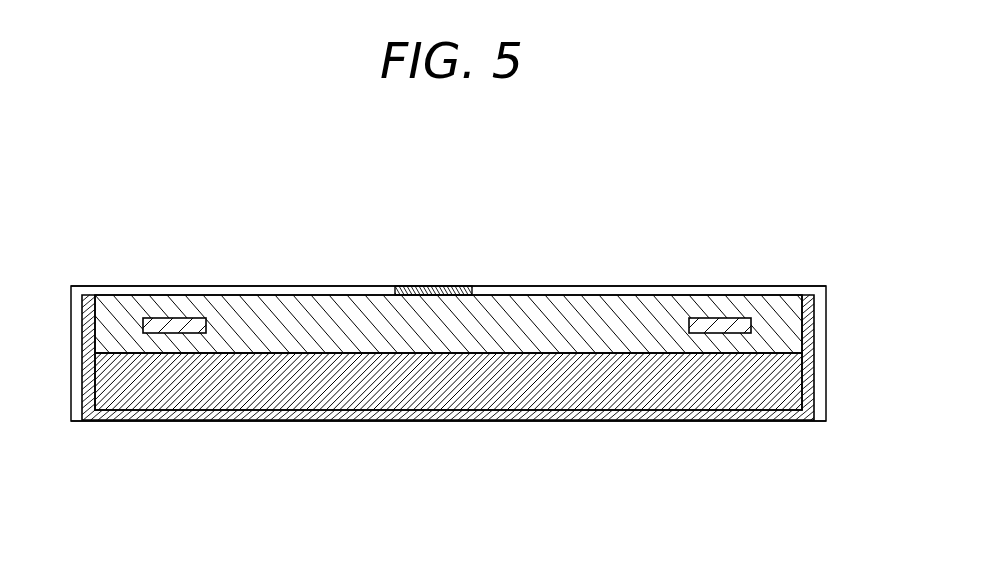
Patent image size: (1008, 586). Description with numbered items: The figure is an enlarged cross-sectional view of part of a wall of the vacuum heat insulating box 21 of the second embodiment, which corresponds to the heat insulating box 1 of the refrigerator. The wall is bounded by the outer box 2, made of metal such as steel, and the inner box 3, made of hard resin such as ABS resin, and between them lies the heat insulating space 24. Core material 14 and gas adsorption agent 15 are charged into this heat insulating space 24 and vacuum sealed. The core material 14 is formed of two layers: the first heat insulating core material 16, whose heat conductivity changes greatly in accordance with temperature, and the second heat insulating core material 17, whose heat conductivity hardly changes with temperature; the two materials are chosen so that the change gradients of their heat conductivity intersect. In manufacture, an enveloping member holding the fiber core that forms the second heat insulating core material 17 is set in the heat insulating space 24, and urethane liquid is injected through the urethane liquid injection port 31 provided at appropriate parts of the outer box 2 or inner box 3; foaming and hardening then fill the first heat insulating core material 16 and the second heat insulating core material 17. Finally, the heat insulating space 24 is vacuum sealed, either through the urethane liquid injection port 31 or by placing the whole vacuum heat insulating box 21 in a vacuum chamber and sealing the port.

The vacuum heat insulating box 21 is at (532, 268).
The heat insulating box 1 is at (448, 348).
The outer box 2 is at (635, 293).
The inner box 3 is at (652, 422).
The core material 14 is at (448, 352).
The first heat insulating core material 16 is at (325, 315).
The second heat insulating core material 17 is at (288, 382).
The gas adsorption agent 15 is at (722, 322).
The heat insulating space 24 is at (235, 352).
The urethane liquid injection port 31 is at (433, 286).